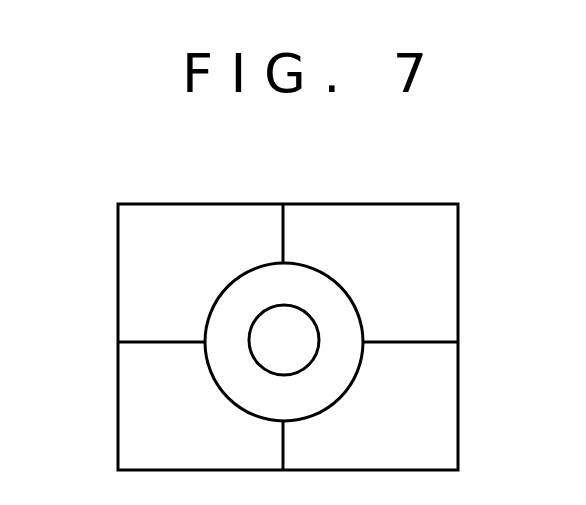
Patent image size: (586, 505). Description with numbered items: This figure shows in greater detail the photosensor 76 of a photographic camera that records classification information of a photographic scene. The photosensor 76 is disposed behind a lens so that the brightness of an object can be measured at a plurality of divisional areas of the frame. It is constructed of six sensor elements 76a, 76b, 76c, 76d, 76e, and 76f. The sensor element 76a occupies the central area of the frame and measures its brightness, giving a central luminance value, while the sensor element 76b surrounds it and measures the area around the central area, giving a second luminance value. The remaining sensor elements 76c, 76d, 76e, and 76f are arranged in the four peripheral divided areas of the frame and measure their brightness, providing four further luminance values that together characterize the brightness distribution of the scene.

The photosensor 76 is at (458, 323).
The sensor element 76a is at (299, 318).
The sensor element 76b is at (245, 289).
The sensor element 76c is at (450, 257).
The sensor element 76d is at (137, 258).
The sensor element 76e is at (137, 398).
The sensor element 76f is at (447, 411).